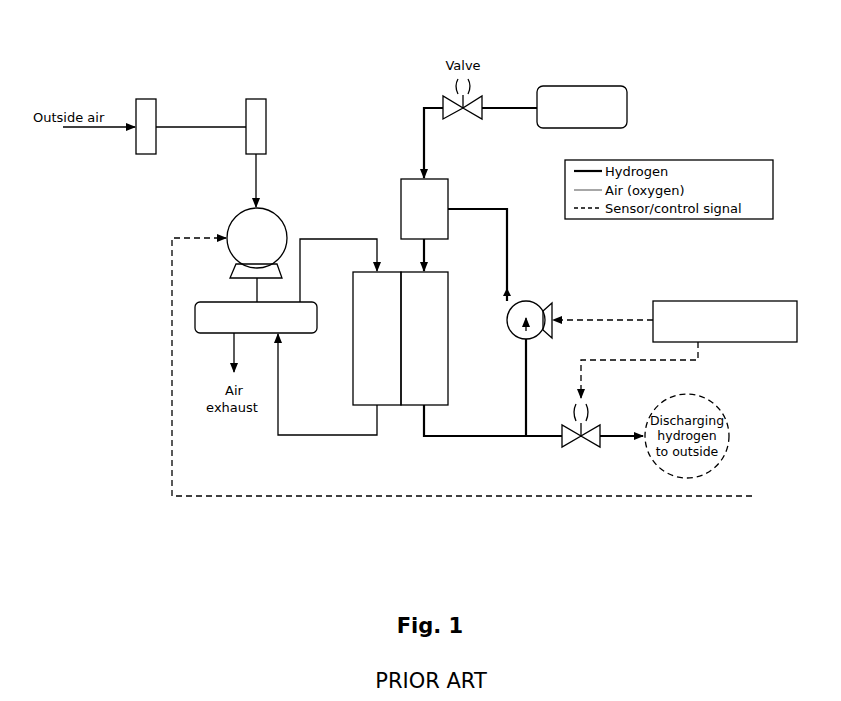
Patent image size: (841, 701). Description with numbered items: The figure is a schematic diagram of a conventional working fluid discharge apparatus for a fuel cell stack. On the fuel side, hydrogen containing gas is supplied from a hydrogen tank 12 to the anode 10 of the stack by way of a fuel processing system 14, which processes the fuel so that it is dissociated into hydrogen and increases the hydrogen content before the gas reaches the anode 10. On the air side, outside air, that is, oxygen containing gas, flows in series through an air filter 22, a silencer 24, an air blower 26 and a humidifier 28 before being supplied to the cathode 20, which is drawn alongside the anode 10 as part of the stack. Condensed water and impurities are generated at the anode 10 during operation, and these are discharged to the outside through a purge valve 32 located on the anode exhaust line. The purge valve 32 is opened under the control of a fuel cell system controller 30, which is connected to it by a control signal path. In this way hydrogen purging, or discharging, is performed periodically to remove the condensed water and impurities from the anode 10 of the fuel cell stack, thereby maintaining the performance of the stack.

The anode 10 is at (400, 338).
The hydrogen tank 12 is at (582, 86).
The fuel processing system 14 is at (450, 186).
The cathode 20 is at (352, 358).
The air filter 22 is at (133, 145).
The silencer 24 is at (268, 122).
The air blower 26 is at (278, 215).
The humidifier 28 is at (211, 335).
The fuel cell system controller 30 is at (735, 300).
The purge valve 32 is at (560, 440).